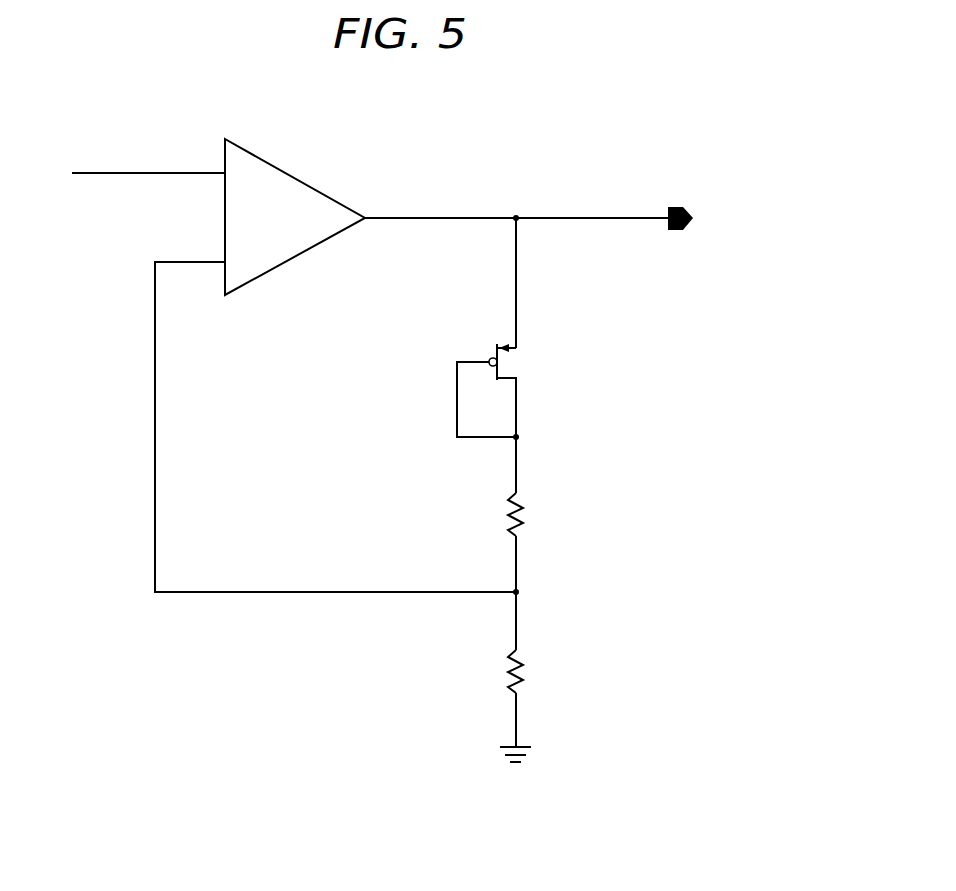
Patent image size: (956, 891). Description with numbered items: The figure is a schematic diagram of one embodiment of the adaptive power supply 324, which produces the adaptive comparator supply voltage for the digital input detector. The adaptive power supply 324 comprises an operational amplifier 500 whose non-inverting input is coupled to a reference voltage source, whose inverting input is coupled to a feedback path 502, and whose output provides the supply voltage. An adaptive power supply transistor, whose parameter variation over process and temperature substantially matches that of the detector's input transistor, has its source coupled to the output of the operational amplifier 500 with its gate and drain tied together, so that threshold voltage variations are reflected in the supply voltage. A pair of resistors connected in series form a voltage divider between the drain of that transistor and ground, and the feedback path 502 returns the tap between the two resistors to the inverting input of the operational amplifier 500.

The adaptive power supply 324 is at (706, 137).
The operational amplifier 500 is at (292, 172).
The feedback path 502 is at (278, 592).